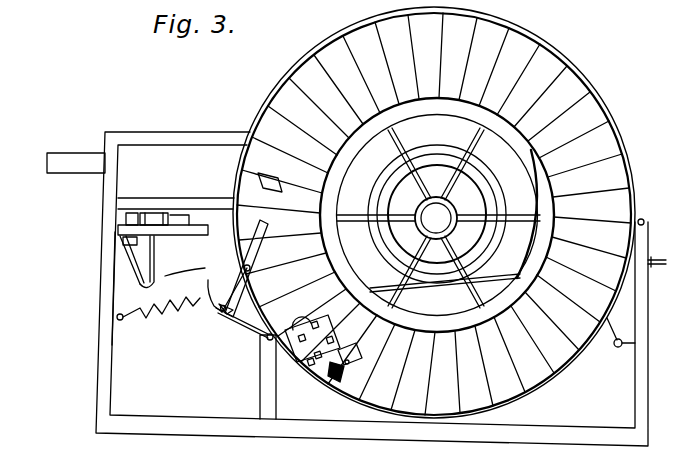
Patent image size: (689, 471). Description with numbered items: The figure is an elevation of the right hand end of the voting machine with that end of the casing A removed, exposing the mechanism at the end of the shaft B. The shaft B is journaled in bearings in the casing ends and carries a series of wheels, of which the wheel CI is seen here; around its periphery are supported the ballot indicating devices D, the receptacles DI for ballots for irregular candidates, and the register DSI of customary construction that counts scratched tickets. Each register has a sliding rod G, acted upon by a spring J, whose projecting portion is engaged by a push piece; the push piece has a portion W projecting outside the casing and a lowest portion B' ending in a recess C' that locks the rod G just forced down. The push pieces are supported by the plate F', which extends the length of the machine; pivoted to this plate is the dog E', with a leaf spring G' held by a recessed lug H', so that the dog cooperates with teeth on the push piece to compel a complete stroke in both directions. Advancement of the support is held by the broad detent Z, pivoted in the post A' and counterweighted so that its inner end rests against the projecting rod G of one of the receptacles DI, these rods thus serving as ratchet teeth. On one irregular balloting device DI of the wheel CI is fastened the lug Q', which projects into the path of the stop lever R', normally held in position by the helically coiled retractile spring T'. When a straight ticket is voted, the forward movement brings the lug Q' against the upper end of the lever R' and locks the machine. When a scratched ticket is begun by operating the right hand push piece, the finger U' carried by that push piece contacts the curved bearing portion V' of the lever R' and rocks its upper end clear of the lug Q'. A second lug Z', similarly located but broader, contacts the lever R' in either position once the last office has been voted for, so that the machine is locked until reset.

The casing A is at (367, 289).
The post A' is at (255, 377).
The projecting portion of push piece W is at (83, 170).
The ballot indicating device D is at (434, 212).
The sliding rod G is at (446, 39).
The irregular balloting device DI is at (582, 213).
The wheel CI is at (458, 121).
The shaft B is at (438, 218).
The lowest portion of push piece B' is at (142, 224).
The recessed lug H' is at (135, 204).
The leaf spring G' is at (157, 204).
The recess C' is at (202, 223).
The plate F' is at (132, 260).
The dog E' is at (157, 262).
The finger U' is at (185, 260).
The spring J is at (143, 283).
The retractile spring T' is at (158, 317).
The curved bearing portion V' is at (218, 288).
The stop lever R' is at (255, 268).
The detent Z is at (244, 330).
The scratched-ticket register DSI is at (268, 174).
The lug Q' is at (293, 200).
The lug Z' is at (347, 376).